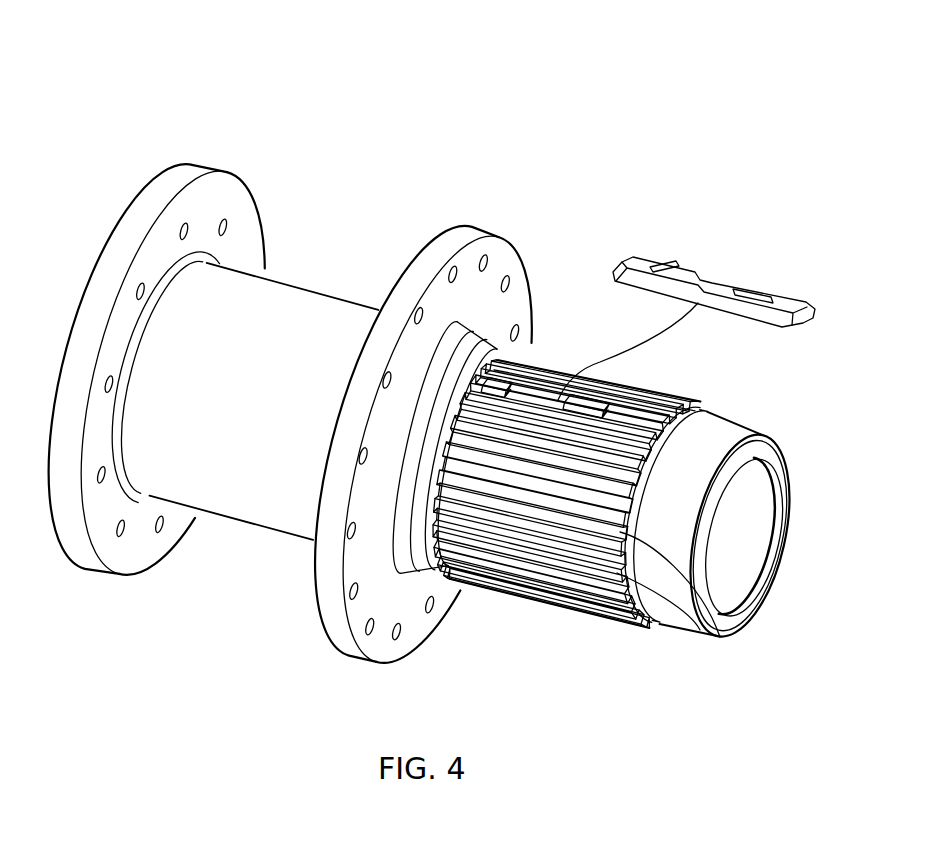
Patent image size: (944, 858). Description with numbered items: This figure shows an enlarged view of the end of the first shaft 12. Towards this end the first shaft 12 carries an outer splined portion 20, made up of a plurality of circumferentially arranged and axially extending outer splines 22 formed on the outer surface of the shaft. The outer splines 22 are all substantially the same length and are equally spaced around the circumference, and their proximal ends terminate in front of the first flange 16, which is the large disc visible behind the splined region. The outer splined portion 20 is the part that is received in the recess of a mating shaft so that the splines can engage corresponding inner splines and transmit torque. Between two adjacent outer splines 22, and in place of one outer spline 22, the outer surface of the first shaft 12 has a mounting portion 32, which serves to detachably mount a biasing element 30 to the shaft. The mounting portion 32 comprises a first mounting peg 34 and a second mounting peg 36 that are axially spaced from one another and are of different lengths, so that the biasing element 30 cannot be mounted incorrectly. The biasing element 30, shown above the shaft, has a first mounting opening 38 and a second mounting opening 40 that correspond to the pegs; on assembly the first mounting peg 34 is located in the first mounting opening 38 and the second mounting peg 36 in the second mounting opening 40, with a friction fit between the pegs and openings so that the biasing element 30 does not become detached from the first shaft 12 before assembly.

The first shaft 12 is at (572, 127).
The first flange 16 is at (487, 247).
The outer splined portion 20 is at (456, 606).
The outer splines 22 is at (698, 635).
The biasing element 30 is at (686, 306).
The mounting portion 32 is at (706, 412).
The first mounting peg 34 is at (650, 397).
The second mounting peg 36 is at (526, 382).
The first mounting opening 38 is at (770, 295).
The second mounting opening 40 is at (666, 268).